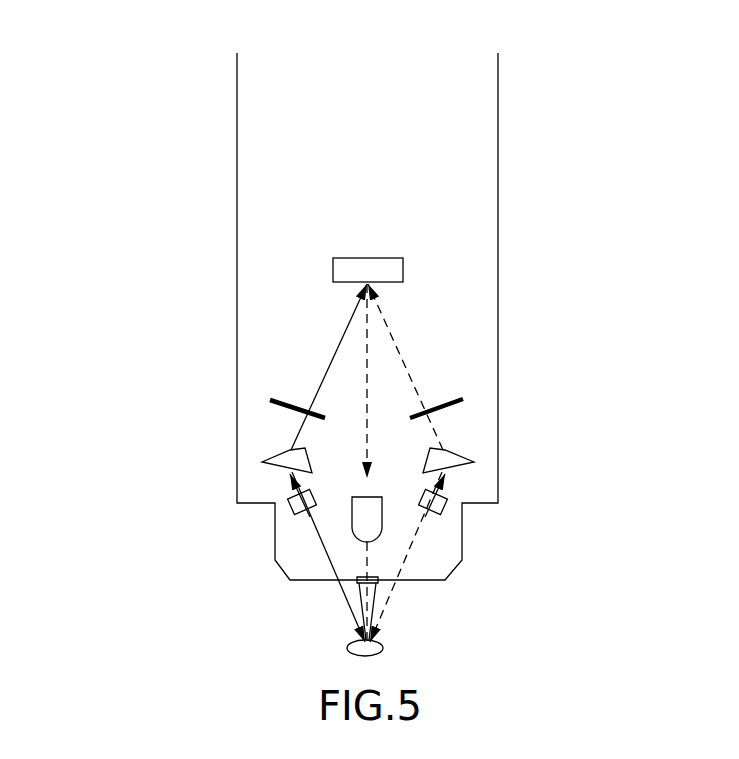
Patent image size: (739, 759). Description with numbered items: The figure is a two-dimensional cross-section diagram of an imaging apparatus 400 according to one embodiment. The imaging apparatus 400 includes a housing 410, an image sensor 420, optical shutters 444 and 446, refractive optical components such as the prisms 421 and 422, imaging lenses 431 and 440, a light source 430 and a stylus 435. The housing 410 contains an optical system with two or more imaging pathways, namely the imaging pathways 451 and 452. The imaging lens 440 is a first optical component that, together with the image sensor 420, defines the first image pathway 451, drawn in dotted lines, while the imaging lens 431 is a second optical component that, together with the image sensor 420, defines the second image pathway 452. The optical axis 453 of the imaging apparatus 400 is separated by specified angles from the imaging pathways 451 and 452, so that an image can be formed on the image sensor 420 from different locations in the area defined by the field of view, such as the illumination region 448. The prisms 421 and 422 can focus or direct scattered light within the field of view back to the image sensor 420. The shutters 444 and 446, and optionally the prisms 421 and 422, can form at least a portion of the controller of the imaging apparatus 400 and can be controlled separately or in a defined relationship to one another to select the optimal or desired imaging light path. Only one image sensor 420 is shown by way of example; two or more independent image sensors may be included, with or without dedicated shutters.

The imaging apparatus 400 is at (90, 63).
The housing 410 is at (234, 243).
The image sensor 420 is at (407, 264).
The prism 421 is at (476, 463).
The prism 422 is at (259, 462).
The light source 430 is at (349, 533).
The imaging lens 431 is at (283, 513).
The stylus 435 is at (386, 605).
The imaging lens 440 is at (452, 517).
The optical shutter 444 is at (452, 397).
The optical shutter 446 is at (284, 398).
The illumination region 448 is at (339, 650).
The imaging pathway 451 is at (408, 350).
The imaging pathway 452 is at (330, 349).
The optical axis 453 is at (373, 343).